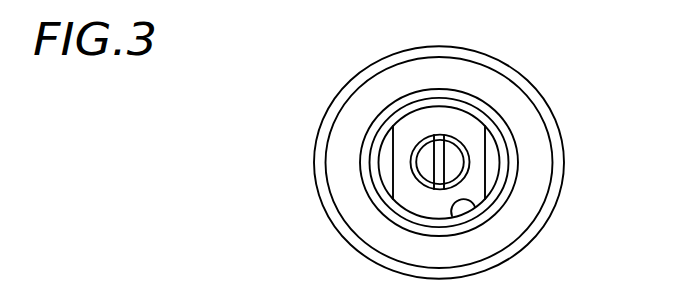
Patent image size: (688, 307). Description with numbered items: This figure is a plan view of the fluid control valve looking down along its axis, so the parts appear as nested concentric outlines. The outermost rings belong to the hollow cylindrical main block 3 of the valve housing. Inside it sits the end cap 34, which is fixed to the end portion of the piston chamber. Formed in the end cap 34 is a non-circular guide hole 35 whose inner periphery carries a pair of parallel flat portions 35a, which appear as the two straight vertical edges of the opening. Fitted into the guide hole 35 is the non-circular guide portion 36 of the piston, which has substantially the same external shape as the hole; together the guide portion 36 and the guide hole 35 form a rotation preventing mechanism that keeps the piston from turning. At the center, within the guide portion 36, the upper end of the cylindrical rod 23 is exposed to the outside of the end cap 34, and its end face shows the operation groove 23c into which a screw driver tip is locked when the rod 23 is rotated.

The main block 3 is at (510, 63).
The rod 23 is at (457, 157).
The operation groove 23c is at (440, 135).
The end cap 34 is at (370, 178).
The guide hole 35 is at (462, 207).
The flat portions 35a is at (390, 152).
The guide portion 36 is at (418, 195).